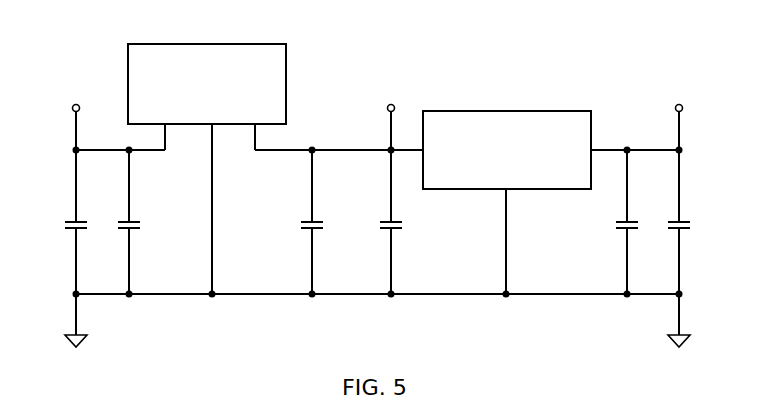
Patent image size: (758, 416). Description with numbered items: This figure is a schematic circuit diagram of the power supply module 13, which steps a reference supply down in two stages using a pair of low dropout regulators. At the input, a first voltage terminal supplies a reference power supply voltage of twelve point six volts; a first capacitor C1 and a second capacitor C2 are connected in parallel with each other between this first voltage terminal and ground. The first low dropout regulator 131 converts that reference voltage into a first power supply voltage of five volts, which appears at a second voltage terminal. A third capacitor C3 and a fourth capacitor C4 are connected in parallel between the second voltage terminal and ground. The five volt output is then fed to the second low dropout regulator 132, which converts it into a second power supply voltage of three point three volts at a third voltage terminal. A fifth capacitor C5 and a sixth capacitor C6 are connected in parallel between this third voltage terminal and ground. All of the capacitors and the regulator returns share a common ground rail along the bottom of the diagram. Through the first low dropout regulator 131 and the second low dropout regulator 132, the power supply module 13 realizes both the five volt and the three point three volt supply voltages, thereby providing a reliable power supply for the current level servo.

The power supply module 13 is at (402, 27).
The first low dropout regulator 131 is at (207, 44).
The second low dropout regulator 132 is at (495, 111).
The first capacitor C1 is at (85, 222).
The second capacitor C2 is at (138, 222).
The third capacitor C3 is at (321, 222).
The fourth capacitor C4 is at (400, 222).
The fifth capacitor C5 is at (635, 222).
The sixth capacitor C6 is at (688, 222).